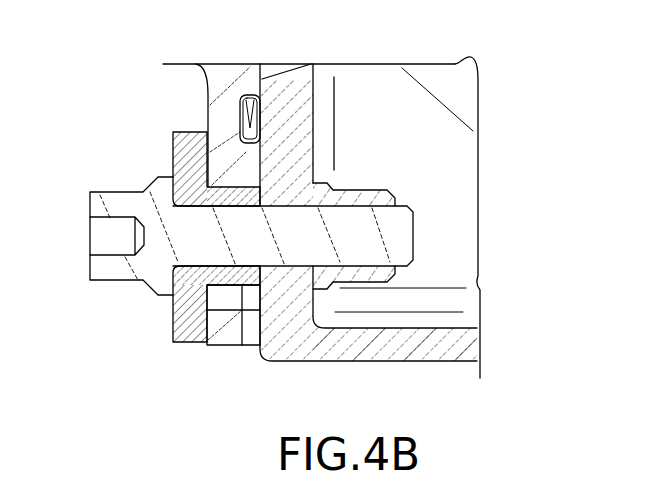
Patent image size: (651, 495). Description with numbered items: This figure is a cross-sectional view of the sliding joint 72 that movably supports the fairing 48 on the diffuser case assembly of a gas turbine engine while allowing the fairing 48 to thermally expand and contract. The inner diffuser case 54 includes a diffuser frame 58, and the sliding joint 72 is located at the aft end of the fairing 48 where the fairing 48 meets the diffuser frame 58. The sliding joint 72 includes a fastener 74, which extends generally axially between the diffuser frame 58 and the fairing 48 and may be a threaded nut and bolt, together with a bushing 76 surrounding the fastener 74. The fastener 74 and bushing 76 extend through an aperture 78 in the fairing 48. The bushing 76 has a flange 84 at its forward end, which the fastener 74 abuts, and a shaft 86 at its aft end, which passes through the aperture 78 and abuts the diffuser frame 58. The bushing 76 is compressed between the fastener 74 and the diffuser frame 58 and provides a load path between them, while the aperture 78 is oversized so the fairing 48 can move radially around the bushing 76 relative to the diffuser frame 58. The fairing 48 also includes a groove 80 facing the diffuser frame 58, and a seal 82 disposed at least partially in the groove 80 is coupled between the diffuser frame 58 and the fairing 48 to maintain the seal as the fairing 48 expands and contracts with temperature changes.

The sliding joint 72 is at (108, 98).
The fairing 48 is at (216, 72).
The seal 82 is at (250, 108).
The diffuser frame 58 is at (382, 72).
The groove 80 is at (238, 124).
The flange 84 is at (173, 143).
The inner diffuser case 54 is at (478, 285).
The bushing 76 is at (190, 315).
The aperture 78 is at (228, 308).
The shaft 86 is at (246, 305).
The fastener 74 is at (283, 243).